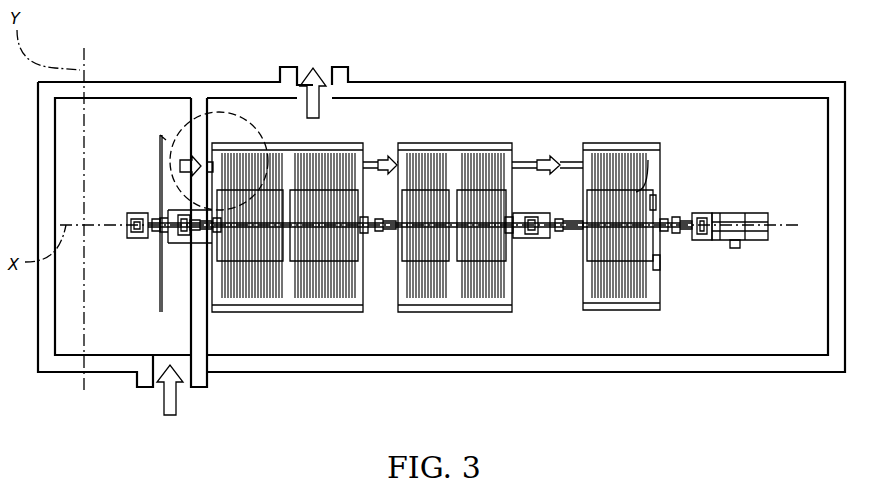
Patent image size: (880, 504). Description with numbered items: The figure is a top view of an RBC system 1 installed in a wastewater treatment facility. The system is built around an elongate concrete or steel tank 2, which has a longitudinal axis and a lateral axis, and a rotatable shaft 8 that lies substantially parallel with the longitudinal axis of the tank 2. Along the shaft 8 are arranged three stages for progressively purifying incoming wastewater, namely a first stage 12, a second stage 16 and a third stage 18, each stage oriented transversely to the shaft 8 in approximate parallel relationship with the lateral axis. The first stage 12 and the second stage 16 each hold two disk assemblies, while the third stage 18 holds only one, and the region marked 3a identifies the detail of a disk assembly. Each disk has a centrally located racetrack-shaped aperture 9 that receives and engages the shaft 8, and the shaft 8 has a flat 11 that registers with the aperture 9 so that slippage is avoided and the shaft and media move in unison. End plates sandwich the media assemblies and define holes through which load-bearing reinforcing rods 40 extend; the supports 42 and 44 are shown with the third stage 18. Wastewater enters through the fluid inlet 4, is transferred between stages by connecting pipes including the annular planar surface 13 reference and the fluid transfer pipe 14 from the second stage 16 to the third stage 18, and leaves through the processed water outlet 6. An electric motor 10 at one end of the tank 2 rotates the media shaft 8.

The RBC system 1 is at (157, 278).
The elongate tank 2 is at (574, 83).
The detail region 3a is at (218, 112).
The wastewater inlet 4 is at (182, 398).
The fluid outlet 6 is at (297, 70).
The rotatable shaft 8 is at (575, 235).
The shaft-receiving aperture 9 is at (180, 243).
The electric motor 10 is at (718, 240).
The flat 11 is at (738, 248).
The first stage 12 is at (257, 312).
The annular planar surface in disk 13 is at (372, 163).
The fluid transfer pipe from second stage to third stage 14 is at (528, 163).
The second stage 16 is at (407, 310).
The third stage 18 is at (622, 310).
The load-bearing reinforcing rods 40 is at (636, 192).
The lower support 42 is at (660, 262).
The upper support 44 is at (656, 206).